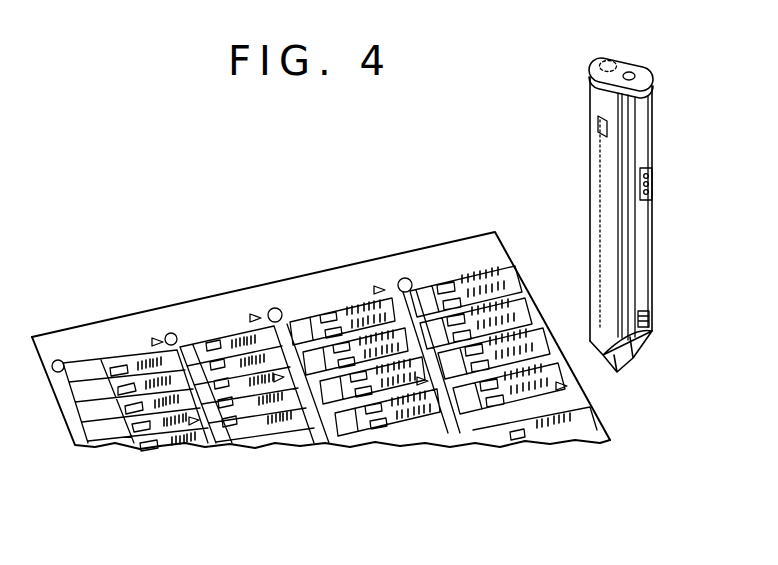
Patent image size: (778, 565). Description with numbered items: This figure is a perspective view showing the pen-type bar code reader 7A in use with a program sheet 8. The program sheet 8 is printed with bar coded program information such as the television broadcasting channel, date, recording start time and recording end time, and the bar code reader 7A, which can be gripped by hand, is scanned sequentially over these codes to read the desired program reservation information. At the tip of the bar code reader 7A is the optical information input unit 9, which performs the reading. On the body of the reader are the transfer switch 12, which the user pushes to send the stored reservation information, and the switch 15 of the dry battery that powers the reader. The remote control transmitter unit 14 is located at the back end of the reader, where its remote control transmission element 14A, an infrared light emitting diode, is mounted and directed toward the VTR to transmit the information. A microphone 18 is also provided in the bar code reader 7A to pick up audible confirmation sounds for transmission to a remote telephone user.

The program sheet 8 is at (215, 303).
The bar code reader 7A is at (593, 218).
The transfer switch 12 is at (597, 126).
The remote control transmitter unit 14 is at (590, 77).
The remote control transmission element 14A is at (613, 58).
The microphone 18 is at (636, 77).
The switch of the dry battery 15 is at (649, 317).
The optical information input unit 9 is at (617, 373).